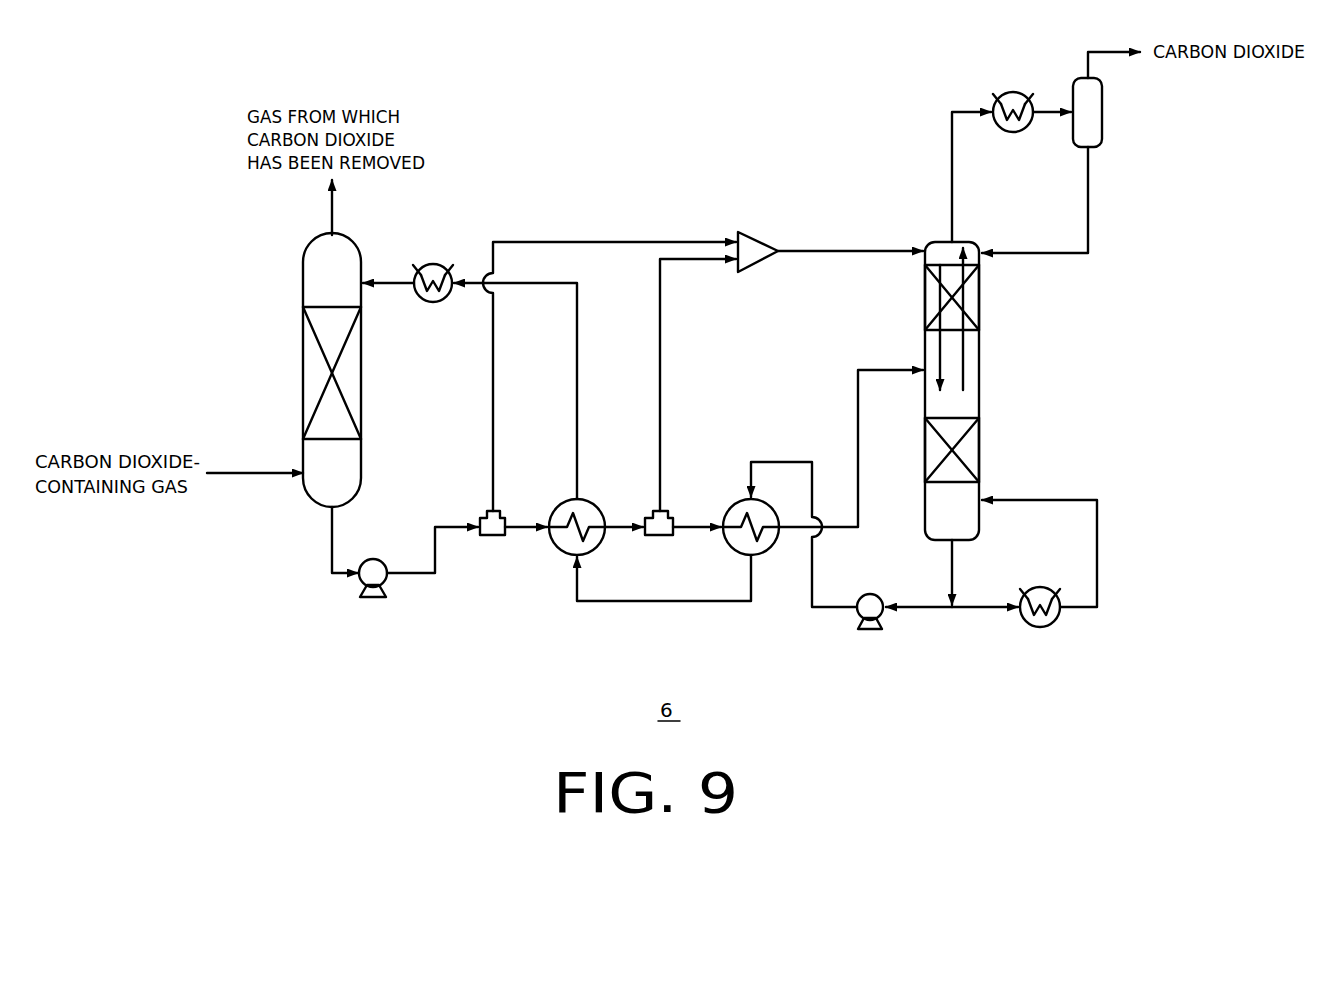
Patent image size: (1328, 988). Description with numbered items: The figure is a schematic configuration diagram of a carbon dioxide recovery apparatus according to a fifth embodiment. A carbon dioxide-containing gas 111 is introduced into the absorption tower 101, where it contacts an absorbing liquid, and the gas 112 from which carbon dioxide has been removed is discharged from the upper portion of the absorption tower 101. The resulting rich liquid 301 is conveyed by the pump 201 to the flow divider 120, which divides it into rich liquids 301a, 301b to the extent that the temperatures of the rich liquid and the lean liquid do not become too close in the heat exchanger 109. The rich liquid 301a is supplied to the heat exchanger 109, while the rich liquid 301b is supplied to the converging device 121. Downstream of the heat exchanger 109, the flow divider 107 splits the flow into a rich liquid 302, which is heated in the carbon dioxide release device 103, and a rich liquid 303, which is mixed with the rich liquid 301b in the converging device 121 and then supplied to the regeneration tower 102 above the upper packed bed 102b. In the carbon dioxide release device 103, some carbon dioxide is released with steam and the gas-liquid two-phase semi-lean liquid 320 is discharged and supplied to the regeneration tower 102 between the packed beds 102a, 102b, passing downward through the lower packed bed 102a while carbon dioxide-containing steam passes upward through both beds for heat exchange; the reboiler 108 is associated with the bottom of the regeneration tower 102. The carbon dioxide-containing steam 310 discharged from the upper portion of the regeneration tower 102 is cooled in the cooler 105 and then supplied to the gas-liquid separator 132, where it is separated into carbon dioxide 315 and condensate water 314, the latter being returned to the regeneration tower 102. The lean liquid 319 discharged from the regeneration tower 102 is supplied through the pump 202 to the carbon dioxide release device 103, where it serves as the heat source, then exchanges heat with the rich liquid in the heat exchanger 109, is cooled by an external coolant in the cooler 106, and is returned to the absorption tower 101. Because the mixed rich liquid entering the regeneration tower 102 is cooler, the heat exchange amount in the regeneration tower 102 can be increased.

The absorption tower 101 is at (302, 281).
The regeneration tower 102 is at (983, 372).
The packed bed 102a is at (966, 451).
The packed bed 102b is at (983, 298).
The carbon dioxide release device 103 is at (761, 550).
The cooler 105 is at (1012, 133).
The cooler 106 is at (430, 262).
The flow divider 107 is at (656, 540).
The reboiler 108 is at (1052, 623).
The heat exchanger 109 is at (597, 509).
The carbon dioxide-containing gas 111 is at (248, 470).
The gas from which carbon dioxide has been removed 112 is at (330, 222).
The flow divider 120 is at (493, 540).
The converging device 121 is at (758, 233).
The gas-liquid separator 132 is at (1104, 110).
The pump 201 is at (380, 560).
The pump 202 is at (862, 594).
The rich liquid 301 is at (330, 563).
The rich liquid 301a is at (520, 515).
The rich liquid 301b is at (490, 380).
The rich liquid 302 is at (683, 516).
The rich liquid 303 is at (661, 332).
The carbon dioxide-containing steam 310 is at (950, 165).
The condensate water 314 is at (1090, 212).
The carbon dioxide 315 is at (1086, 48).
The lean liquid 319 is at (392, 285).
The semi-lean liquid 320 is at (856, 393).